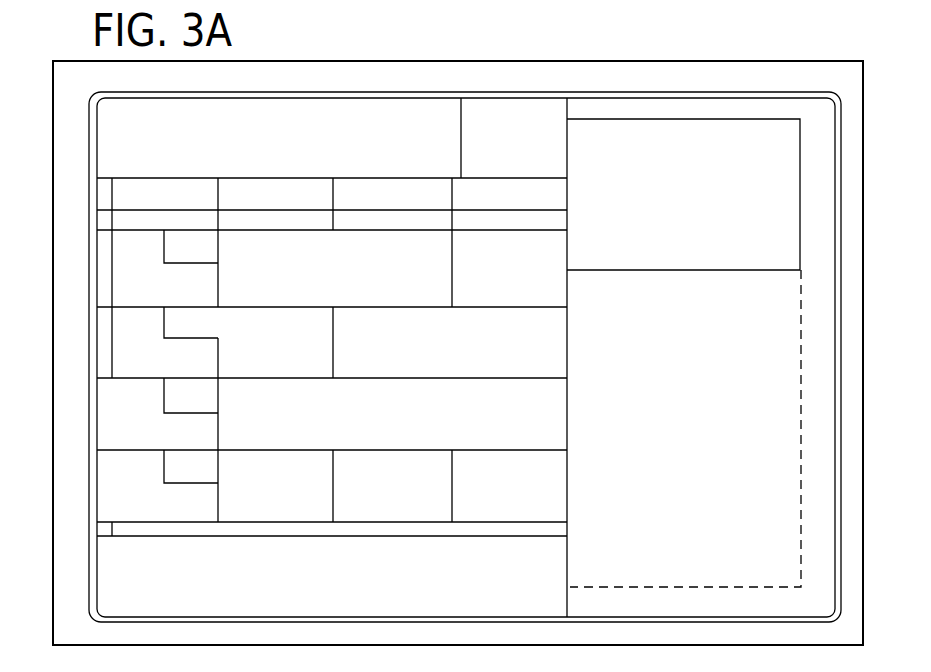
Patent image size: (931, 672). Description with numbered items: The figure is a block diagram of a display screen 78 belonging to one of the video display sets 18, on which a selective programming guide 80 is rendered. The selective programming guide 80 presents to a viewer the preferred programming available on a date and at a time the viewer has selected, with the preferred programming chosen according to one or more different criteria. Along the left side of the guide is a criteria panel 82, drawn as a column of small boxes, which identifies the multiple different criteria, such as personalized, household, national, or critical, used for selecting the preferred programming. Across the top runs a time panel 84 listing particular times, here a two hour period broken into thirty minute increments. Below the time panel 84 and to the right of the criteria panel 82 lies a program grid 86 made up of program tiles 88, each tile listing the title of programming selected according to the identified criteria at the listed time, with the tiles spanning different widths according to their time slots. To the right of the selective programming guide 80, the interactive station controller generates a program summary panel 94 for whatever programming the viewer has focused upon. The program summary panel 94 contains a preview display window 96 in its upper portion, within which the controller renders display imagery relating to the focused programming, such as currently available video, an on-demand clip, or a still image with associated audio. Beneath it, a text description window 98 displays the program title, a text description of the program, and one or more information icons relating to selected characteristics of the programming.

The video display set 18 is at (760, 70).
The display screen 78 is at (508, 93).
The selective programming guide 80 is at (132, 251).
The criteria panel 82 is at (173, 252).
The time panel 84 is at (243, 178).
The program grid 86 is at (413, 497).
The program tiles 88 is at (280, 282).
The program summary panel 94 is at (800, 200).
The preview display window 96 is at (652, 218).
The text description window 98 is at (648, 438).